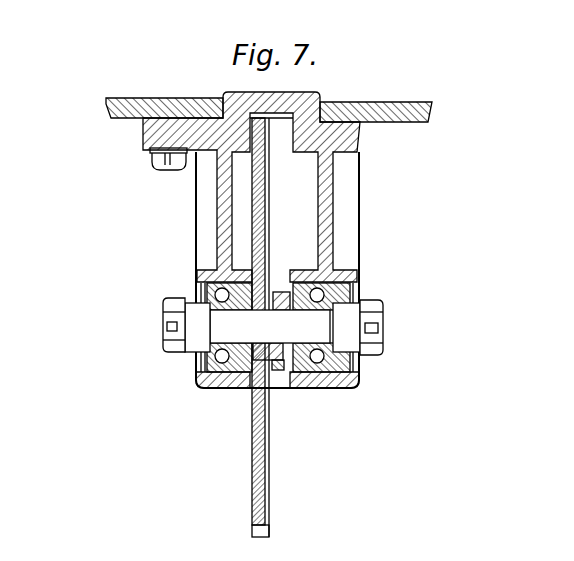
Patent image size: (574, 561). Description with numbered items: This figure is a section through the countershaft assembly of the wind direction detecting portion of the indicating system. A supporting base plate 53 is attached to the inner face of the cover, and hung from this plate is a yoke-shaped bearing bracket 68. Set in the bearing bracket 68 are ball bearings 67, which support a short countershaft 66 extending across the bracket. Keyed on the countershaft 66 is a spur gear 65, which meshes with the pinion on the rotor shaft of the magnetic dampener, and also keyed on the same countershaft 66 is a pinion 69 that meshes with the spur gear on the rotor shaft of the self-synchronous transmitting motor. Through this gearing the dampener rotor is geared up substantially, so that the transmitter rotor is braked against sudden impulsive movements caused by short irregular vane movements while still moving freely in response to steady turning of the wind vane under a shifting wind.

The supporting base plate 53 is at (128, 113).
The spur gear 65 is at (253, 441).
The countershaft 66 is at (222, 330).
The ball bearings 67 is at (311, 270).
The bearing bracket 68 is at (220, 219).
The pinion 69 is at (282, 371).